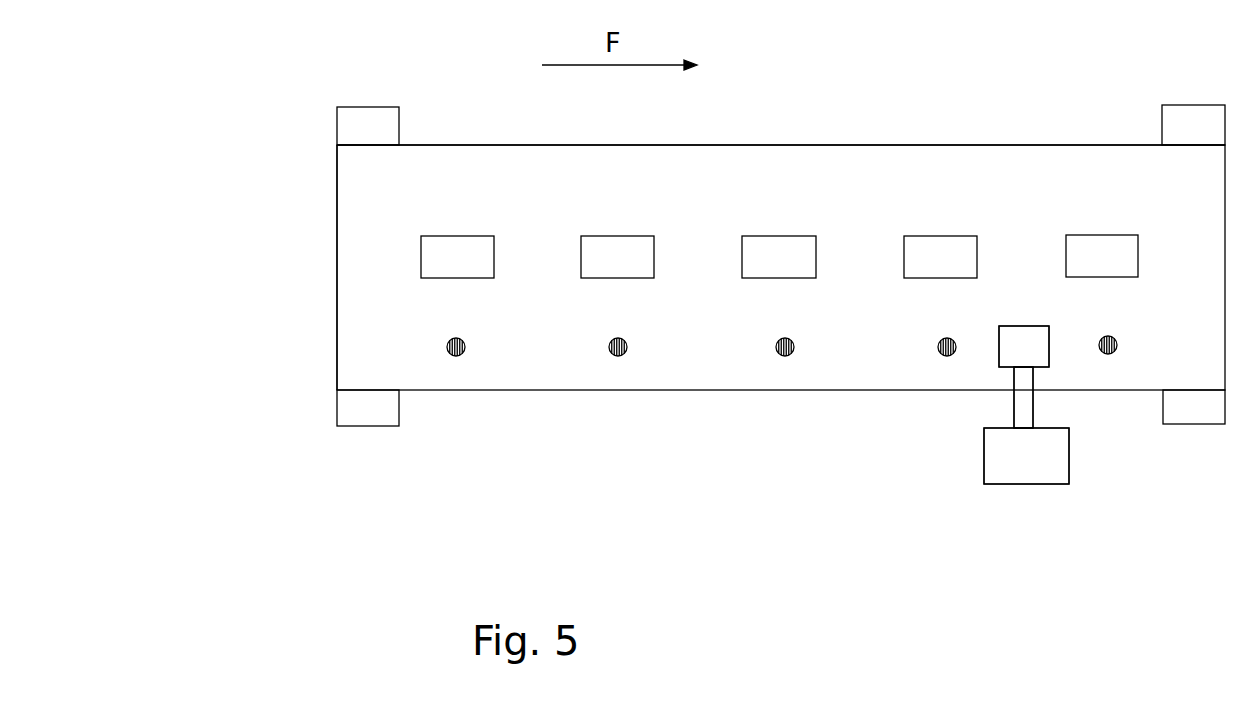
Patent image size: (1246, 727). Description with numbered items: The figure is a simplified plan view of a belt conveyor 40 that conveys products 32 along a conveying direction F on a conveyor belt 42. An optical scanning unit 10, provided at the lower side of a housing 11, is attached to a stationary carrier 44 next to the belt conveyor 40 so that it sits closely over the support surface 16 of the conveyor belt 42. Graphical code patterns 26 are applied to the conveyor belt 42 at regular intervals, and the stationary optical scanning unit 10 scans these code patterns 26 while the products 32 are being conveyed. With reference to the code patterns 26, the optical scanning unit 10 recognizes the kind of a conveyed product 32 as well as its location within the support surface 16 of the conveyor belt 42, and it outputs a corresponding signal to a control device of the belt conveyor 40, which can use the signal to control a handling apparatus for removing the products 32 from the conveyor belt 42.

The optical scanning unit 10 is at (981, 358).
The housing 11 is at (1052, 353).
The support surface 16 is at (1020, 186).
The graphical code patterns 26 is at (460, 358).
The products 32 is at (449, 249).
The belt conveyor 40 is at (284, 217).
The conveyor belt 42 is at (365, 325).
The stationary carrier 44 is at (1013, 403).